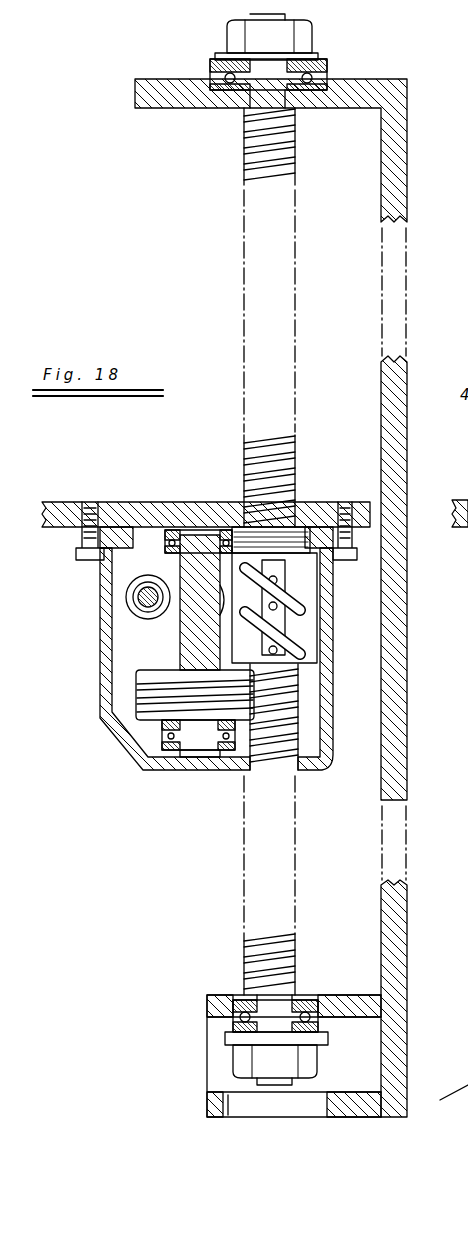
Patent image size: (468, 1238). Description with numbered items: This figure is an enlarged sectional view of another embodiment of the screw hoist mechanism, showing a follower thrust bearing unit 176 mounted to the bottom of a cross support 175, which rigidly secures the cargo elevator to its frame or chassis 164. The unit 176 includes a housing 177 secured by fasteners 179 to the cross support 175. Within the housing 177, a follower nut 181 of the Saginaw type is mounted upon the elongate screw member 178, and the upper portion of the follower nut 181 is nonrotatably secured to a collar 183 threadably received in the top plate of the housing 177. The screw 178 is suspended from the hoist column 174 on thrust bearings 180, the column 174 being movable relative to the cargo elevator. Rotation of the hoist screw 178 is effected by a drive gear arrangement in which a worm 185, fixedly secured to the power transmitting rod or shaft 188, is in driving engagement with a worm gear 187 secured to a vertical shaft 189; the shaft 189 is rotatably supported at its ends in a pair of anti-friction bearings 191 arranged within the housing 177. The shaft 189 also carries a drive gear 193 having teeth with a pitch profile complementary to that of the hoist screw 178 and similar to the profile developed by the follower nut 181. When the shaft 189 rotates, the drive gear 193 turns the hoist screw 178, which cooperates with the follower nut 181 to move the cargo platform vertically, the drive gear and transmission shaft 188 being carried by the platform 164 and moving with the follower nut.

The frame or chassis 164 is at (110, 500).
The hoist column 174 is at (135, 92).
The cross support 175 is at (150, 502).
The follower thrust bearing unit 176 is at (182, 786).
The housing 177 is at (112, 527).
The elongate screw member 178 is at (243, 168).
The fastener 179 is at (80, 540).
The thrust bearing 180 is at (325, 74).
The follower nut 181 is at (310, 628).
The collar 183 is at (312, 527).
The worm 185 is at (127, 578).
The worm gear 187 is at (165, 625).
The power transmitting rod or shaft 188 is at (136, 612).
The vertical shaft 189 is at (180, 645).
The anti-friction bearing 191 is at (200, 527).
The drive gear 193 is at (137, 697).